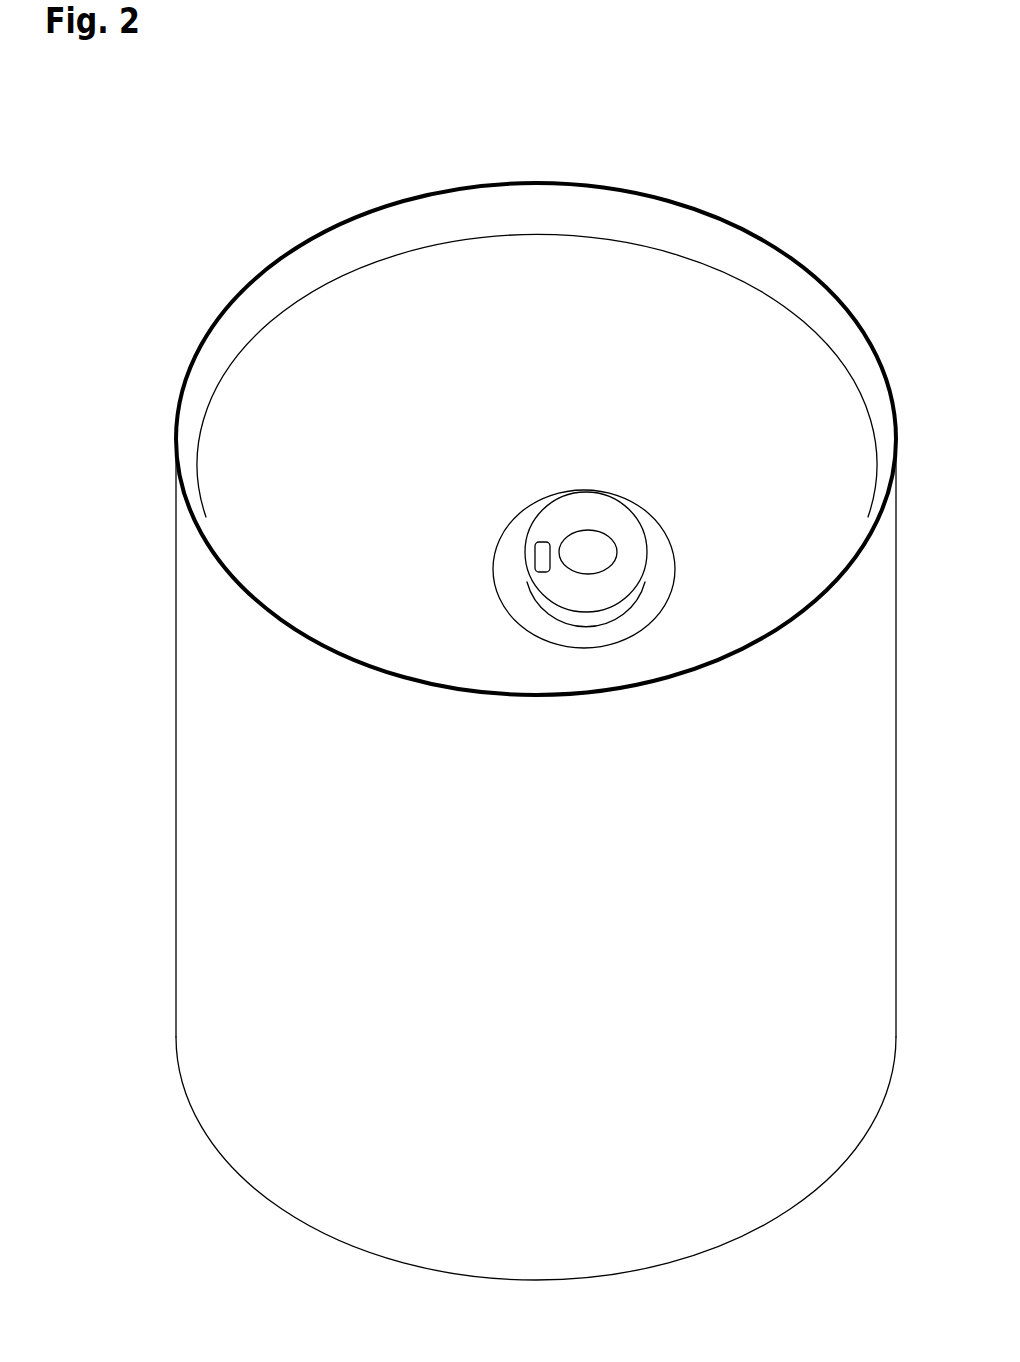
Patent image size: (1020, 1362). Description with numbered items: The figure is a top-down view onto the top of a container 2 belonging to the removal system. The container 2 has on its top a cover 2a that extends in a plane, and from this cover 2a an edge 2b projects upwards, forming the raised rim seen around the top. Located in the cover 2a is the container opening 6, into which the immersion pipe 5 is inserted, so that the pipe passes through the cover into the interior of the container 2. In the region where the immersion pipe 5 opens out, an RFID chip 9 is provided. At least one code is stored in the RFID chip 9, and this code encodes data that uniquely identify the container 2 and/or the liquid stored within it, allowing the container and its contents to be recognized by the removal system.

The container 2 is at (838, 260).
The cover 2a is at (623, 369).
The edge 2b is at (202, 340).
The immersion pipe 5 is at (587, 508).
The container opening 6 is at (655, 553).
The RFID chip 9 is at (538, 549).